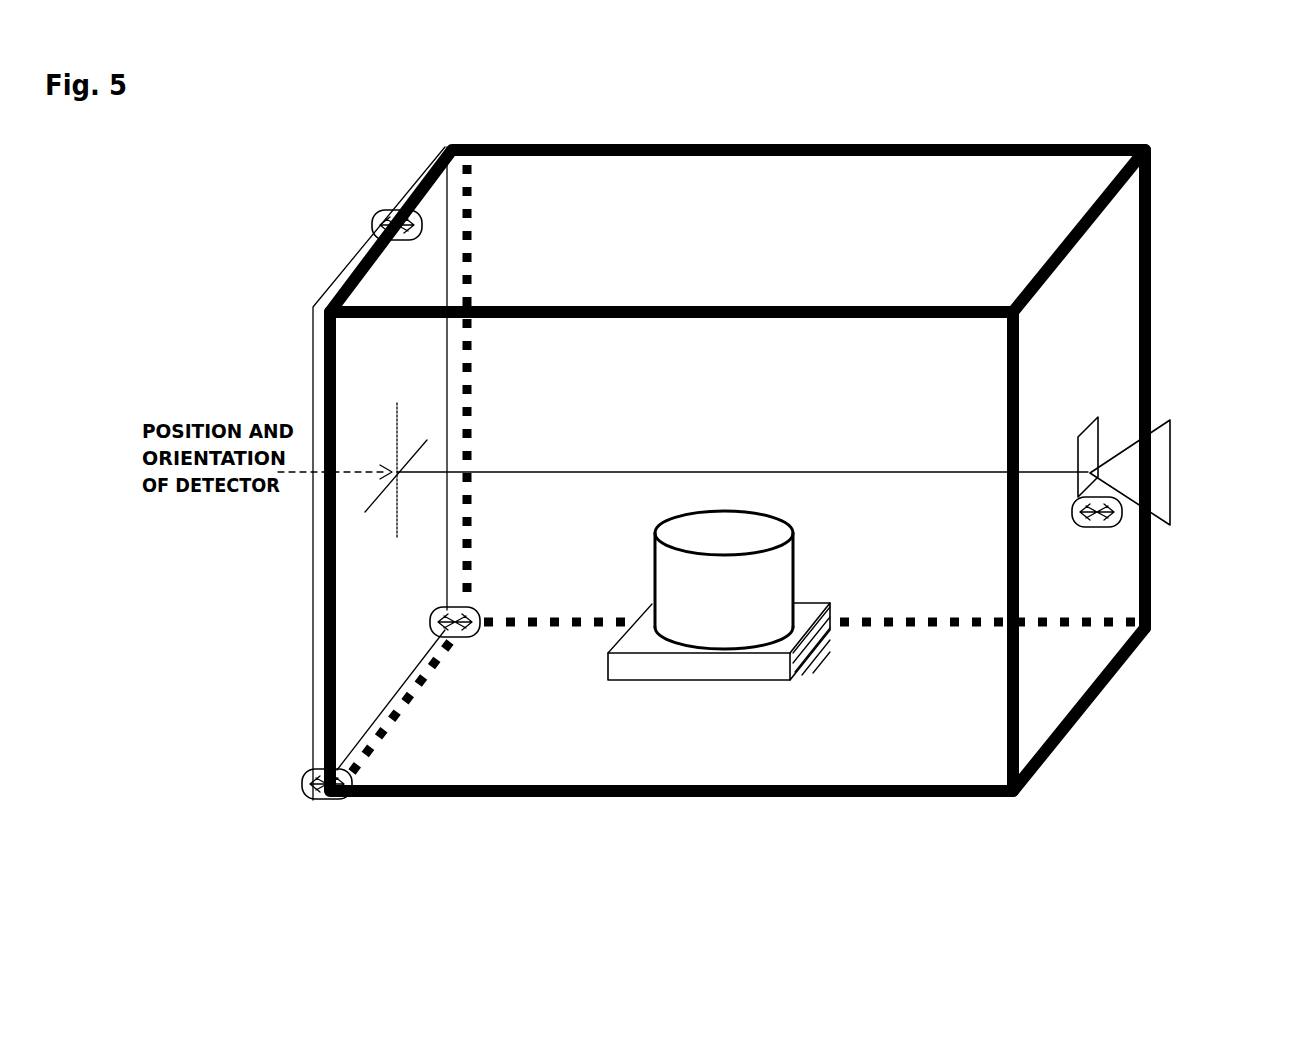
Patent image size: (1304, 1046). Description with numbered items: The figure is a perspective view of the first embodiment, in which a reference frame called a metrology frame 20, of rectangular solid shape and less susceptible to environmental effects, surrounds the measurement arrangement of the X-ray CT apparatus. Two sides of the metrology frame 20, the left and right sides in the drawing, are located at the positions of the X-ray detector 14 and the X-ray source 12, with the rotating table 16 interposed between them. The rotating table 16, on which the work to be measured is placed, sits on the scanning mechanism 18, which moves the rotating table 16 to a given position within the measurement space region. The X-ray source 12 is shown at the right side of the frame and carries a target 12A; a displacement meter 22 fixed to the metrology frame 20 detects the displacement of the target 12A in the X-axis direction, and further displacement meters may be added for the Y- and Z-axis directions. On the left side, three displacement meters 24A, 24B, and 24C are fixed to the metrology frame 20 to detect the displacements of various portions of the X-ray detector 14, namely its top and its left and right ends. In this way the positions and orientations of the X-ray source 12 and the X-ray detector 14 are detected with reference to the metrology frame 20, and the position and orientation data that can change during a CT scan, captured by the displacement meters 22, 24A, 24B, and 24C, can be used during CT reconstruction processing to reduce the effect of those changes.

The metrology frame 20 is at (630, 143).
The X-ray detector 14 is at (315, 337).
The rotating table 16 is at (753, 527).
The scanning mechanism 18 is at (690, 680).
The X-ray source 12 is at (1172, 505).
The target 12A is at (1092, 462).
The displacement meter 22 is at (1097, 530).
The displacement meter 24A is at (373, 214).
The displacement meter 24B is at (330, 802).
The displacement meter 24C is at (462, 640).